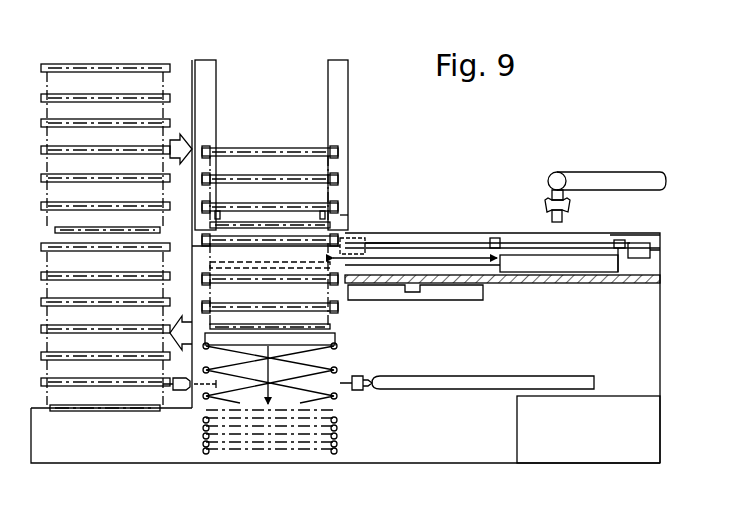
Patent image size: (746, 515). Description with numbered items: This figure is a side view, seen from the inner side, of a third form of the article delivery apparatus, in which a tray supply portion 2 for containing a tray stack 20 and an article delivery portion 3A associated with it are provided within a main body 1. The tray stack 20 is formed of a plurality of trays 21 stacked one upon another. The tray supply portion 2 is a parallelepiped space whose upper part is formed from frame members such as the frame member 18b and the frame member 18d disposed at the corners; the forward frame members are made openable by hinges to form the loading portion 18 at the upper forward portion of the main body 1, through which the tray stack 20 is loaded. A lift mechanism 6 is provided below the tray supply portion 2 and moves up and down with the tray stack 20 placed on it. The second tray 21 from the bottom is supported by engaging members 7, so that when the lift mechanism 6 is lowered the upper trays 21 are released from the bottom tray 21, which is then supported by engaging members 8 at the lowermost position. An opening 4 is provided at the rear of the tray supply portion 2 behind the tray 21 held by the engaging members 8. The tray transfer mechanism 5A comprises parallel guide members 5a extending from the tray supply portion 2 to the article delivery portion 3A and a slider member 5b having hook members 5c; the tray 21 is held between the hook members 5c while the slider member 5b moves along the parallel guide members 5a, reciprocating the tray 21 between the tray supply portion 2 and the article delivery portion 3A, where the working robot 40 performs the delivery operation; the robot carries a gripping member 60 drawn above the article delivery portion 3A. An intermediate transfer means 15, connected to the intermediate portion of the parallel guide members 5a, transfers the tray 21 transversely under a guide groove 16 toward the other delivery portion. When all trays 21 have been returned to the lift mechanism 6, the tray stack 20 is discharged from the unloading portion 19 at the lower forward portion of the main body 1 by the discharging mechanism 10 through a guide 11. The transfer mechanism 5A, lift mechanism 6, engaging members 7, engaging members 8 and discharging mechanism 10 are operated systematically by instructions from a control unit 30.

The main body 1 is at (490, 232).
The tray supply portion 2 is at (410, 211).
The article delivery portion 3A is at (613, 233).
The opening 4 is at (356, 238).
The parallel guide members 5a is at (452, 243).
The tray transfer mechanism 5A is at (374, 244).
The slider member 5b is at (650, 252).
The hook members 5c is at (625, 243).
The lift mechanism 6 is at (336, 339).
The engaging members 7 is at (350, 216).
The engaging members 8 is at (200, 238).
The discharging mechanism 10 is at (446, 384).
The guide 11 is at (125, 454).
The intermediate transfer means 15 is at (425, 302).
The guide groove 16 is at (480, 284).
The loading portion 18 is at (187, 76).
The frame member 18b is at (208, 62).
The frame member 18d is at (340, 60).
The unloading portion 19 is at (190, 398).
The tray stack 20 is at (125, 64).
The tray 21 is at (240, 160).
The control unit 30 is at (618, 402).
The working robot 40 is at (612, 172).
The gripper 60 is at (563, 222).